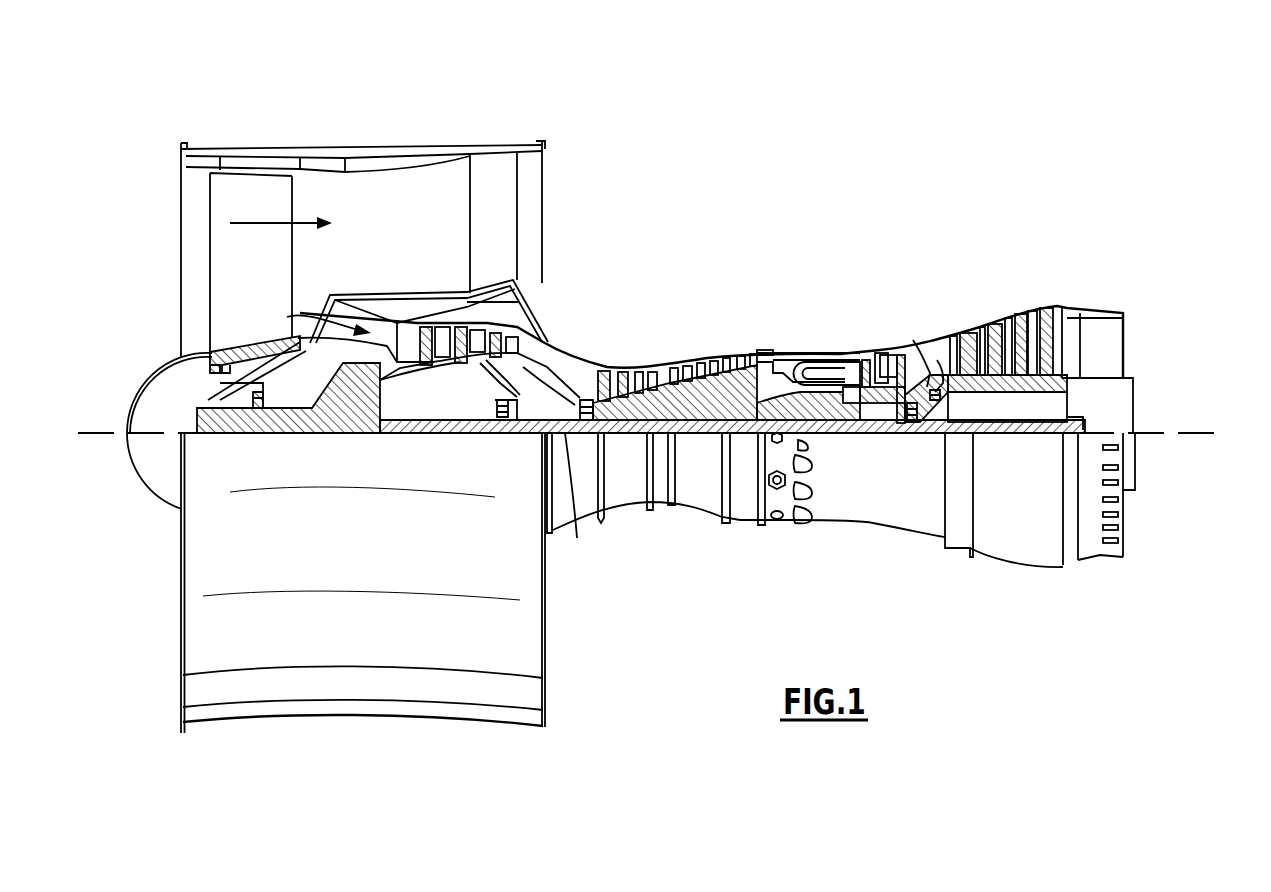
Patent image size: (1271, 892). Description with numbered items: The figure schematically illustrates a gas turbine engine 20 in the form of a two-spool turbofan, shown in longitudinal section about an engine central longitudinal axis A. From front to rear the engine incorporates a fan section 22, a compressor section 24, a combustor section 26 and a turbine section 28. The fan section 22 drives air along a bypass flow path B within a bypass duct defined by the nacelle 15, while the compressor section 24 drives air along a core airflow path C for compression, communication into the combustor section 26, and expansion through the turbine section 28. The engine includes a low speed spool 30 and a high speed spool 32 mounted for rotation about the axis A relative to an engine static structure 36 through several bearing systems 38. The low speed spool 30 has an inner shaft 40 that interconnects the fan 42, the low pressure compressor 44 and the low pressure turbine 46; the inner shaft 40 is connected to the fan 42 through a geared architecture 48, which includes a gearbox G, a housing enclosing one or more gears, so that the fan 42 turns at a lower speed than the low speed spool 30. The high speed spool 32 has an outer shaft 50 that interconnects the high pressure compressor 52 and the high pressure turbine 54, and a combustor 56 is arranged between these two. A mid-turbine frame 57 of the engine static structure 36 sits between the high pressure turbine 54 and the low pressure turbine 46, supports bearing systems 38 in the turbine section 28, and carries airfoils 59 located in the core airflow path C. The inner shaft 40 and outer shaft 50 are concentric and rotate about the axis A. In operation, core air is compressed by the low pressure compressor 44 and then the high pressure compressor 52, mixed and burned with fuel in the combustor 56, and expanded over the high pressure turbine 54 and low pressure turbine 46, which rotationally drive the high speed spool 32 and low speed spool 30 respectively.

The gas turbine engine 20 is at (830, 199).
The fan section 22 is at (291, 135).
The nacelle 15 is at (367, 153).
The fan 42 is at (266, 282).
The compressor section 24 is at (600, 332).
The low pressure compressor 44 is at (460, 353).
The geared architecture 48 is at (370, 417).
The bearing systems 38 is at (512, 417).
The high pressure compressor 52 is at (673, 383).
The high speed spool 32 is at (747, 363).
The combustor section 26 is at (819, 323).
The combustor 56 is at (817, 373).
The high pressure turbine 54 is at (882, 352).
The mid-turbine frame 57 is at (932, 337).
The turbine section 28 is at (968, 286).
The low pressure turbine 46 is at (1008, 307).
The airfoils 59 is at (935, 367).
The outer shaft 50 is at (823, 413).
The inner shaft 40 is at (577, 538).
The low speed spool 30 is at (702, 445).
The engine static structure 36 is at (742, 533).
The engine central longitudinal axis A is at (1215, 433).
The bypass flow path B is at (268, 223).
The core airflow path C is at (287, 317).
The gearbox G is at (380, 398).